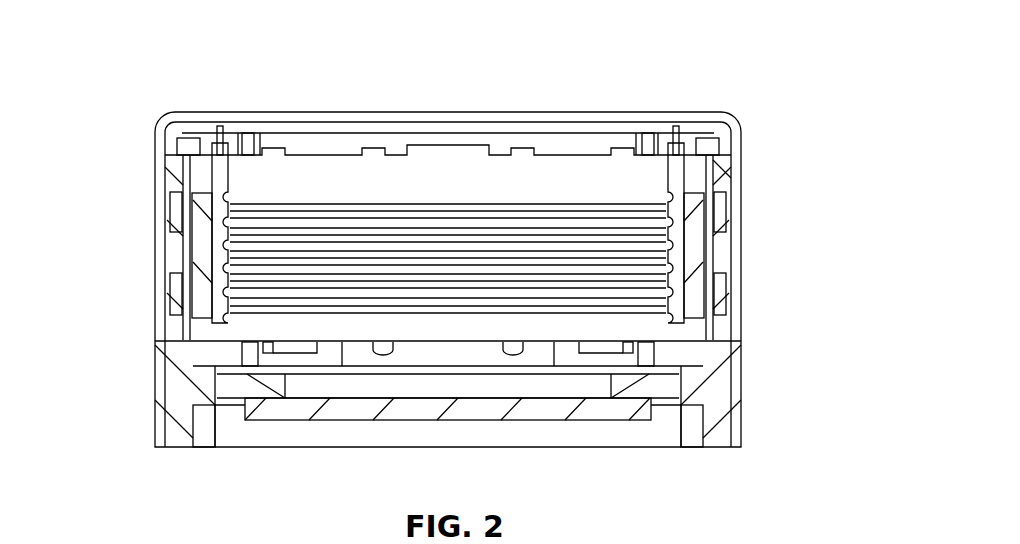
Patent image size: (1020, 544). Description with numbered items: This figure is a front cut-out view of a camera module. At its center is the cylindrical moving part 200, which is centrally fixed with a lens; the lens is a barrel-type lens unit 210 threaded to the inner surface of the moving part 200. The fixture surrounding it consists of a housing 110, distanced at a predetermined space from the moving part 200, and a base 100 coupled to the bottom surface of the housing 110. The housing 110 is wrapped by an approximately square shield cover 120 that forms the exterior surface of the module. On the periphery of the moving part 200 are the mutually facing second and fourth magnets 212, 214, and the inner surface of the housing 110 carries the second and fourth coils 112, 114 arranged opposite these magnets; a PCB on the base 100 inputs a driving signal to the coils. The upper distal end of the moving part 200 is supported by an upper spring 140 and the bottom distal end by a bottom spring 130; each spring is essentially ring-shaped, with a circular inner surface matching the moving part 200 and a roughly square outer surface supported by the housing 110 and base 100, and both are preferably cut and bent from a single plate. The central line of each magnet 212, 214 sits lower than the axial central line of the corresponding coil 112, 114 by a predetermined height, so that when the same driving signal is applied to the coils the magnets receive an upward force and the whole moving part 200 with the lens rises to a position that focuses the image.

The base 100 is at (718, 388).
The housing 110 is at (718, 165).
The second coil 112 is at (719, 218).
The fourth coil 114 is at (172, 213).
The shield cover 120 is at (708, 111).
The bottom spring 130 is at (235, 343).
The upper spring 140 is at (278, 153).
The moving part 200 is at (215, 192).
The lens unit 210 is at (638, 330).
The second magnet 212 is at (697, 278).
The fourth magnet 214 is at (200, 258).